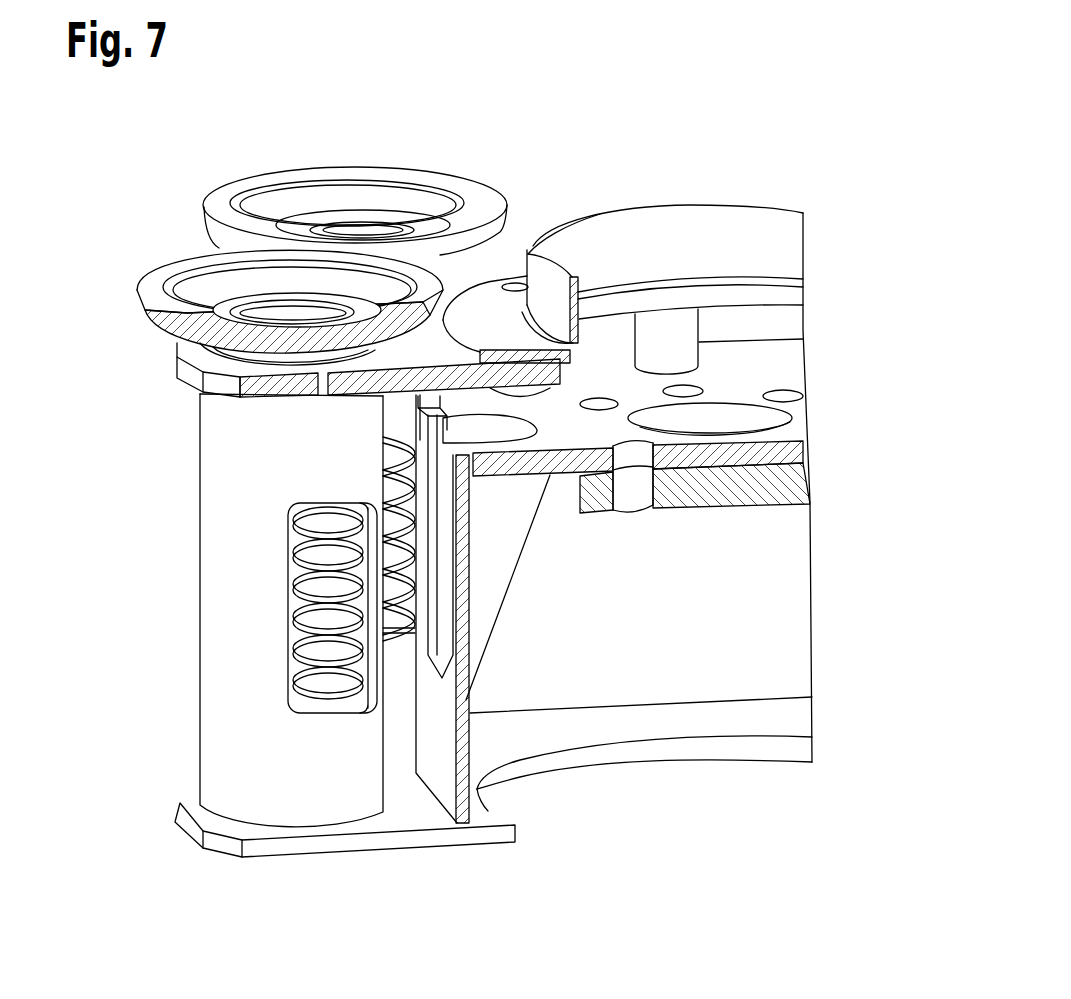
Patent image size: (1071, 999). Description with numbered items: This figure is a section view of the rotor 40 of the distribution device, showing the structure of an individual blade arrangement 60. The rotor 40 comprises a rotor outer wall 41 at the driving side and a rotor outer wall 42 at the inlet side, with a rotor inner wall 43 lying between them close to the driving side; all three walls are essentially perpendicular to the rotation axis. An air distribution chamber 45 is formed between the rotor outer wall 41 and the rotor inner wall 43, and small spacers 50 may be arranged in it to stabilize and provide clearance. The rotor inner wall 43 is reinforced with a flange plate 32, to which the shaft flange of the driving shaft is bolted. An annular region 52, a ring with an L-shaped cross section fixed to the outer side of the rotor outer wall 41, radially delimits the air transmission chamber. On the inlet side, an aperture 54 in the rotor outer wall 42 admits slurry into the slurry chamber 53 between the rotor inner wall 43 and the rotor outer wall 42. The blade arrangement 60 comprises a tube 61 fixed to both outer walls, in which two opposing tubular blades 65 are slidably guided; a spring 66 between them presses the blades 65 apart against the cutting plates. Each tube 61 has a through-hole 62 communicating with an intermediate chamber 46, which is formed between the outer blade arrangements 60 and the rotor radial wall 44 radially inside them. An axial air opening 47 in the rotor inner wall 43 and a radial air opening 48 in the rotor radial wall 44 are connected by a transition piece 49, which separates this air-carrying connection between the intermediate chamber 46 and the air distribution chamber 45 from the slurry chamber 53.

The rotor 40 is at (268, 118).
The blade arrangement 60 is at (103, 353).
The tubular blade 65 is at (160, 275).
The rotor outer wall at the driving side 41 is at (512, 262).
The annular region 52 is at (622, 229).
The air distribution chamber 45 is at (729, 329).
The spacer 50 is at (678, 359).
The rotor inner wall 43 is at (793, 452).
The flange plate 32 is at (793, 483).
The slurry chamber 53 is at (793, 638).
The rotor outer wall at the inlet side 42 is at (793, 717).
The tube 61 is at (233, 578).
The spring 66 is at (292, 686).
The axial air opening 47 is at (508, 432).
The transition piece 49 is at (493, 575).
The radial air opening 48 is at (435, 625).
The through-hole 62 is at (354, 703).
The intermediate chamber 46 is at (398, 737).
The rotor radial wall 44 is at (468, 813).
The aperture 54 is at (588, 752).